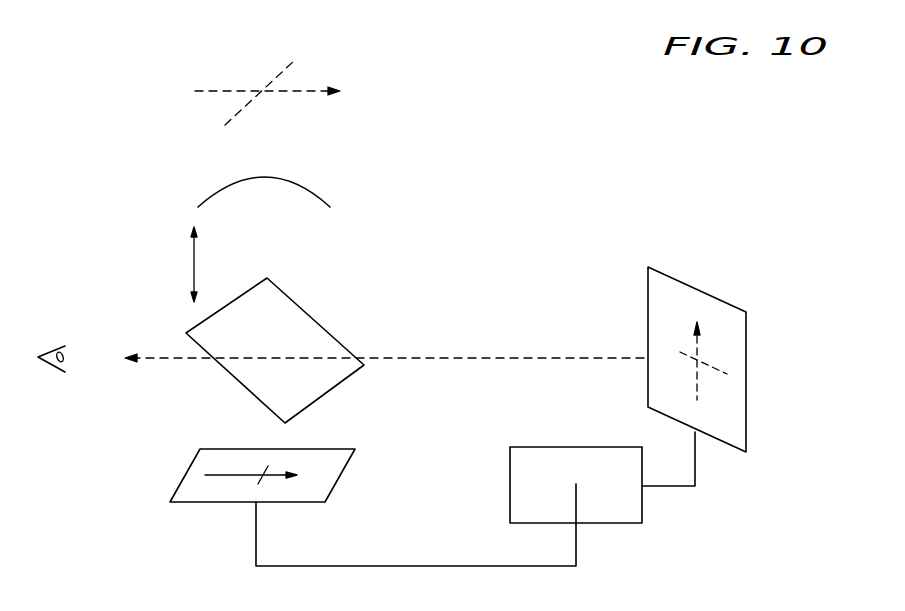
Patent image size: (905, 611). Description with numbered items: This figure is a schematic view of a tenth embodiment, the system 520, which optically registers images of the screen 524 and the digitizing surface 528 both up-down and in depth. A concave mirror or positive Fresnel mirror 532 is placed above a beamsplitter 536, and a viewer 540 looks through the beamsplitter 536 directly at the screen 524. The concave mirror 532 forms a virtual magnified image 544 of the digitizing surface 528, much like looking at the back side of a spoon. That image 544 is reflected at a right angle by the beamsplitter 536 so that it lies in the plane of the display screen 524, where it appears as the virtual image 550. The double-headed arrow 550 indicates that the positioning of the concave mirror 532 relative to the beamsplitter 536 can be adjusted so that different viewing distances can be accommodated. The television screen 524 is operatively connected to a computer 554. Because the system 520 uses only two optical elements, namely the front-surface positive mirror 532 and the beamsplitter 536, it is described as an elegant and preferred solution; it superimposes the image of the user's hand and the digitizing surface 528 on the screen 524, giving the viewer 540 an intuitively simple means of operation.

The system 520 is at (560, 178).
The screen 524 is at (697, 287).
The digitizing surface 528 is at (340, 475).
The concave mirror 532 is at (327, 201).
The beamsplitter 536 is at (316, 313).
The viewer 540 is at (55, 368).
The virtual magnified image 544 is at (225, 90).
The virtual image 550 is at (193, 265).
The computer 554 is at (566, 447).